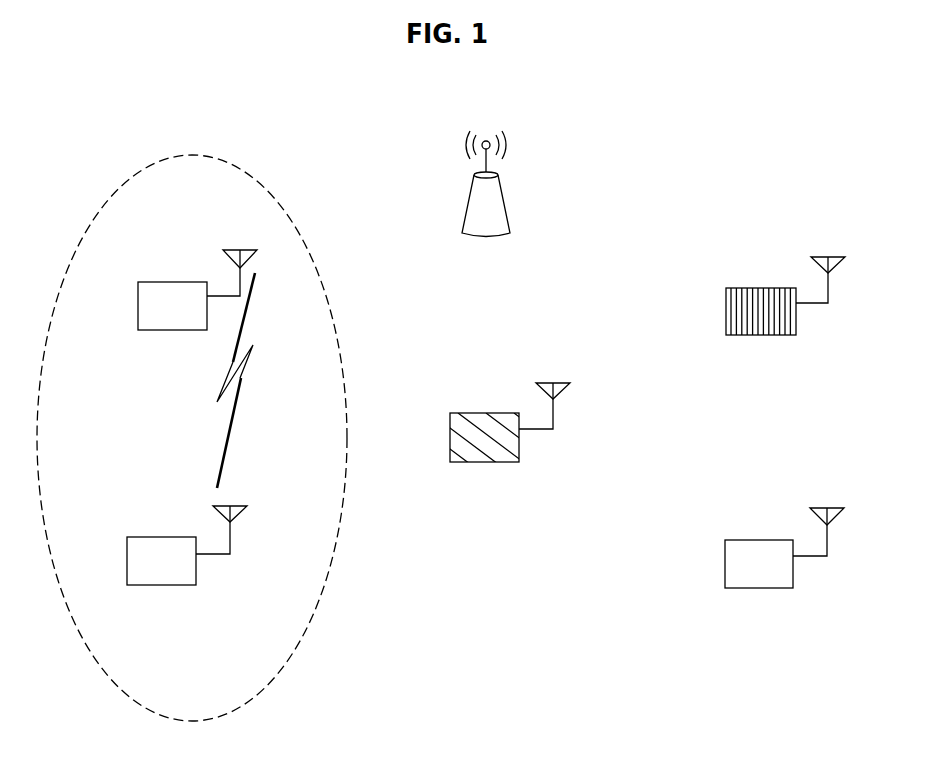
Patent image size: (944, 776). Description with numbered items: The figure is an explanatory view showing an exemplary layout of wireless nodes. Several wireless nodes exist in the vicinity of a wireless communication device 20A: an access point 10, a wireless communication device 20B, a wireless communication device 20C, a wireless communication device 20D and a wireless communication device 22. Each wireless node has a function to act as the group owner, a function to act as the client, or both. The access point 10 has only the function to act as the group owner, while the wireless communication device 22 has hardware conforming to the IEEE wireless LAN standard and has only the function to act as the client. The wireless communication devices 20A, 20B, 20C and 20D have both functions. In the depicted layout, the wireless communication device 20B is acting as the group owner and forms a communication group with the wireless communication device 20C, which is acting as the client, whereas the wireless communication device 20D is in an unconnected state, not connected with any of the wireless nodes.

The access point 10 is at (510, 200).
The wireless communication device 20A is at (486, 462).
The wireless communication device 20B is at (143, 330).
The wireless communication device 20C is at (163, 585).
The wireless communication device 20D is at (759, 588).
The wireless communication device 22 is at (762, 335).